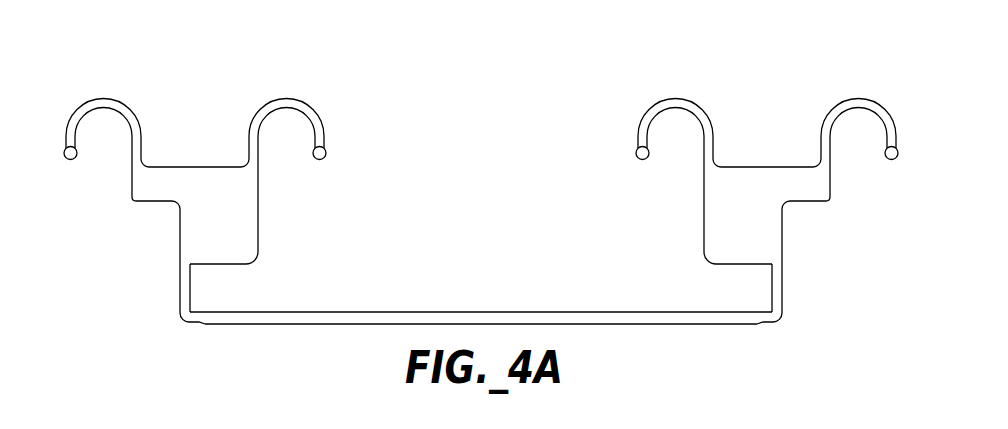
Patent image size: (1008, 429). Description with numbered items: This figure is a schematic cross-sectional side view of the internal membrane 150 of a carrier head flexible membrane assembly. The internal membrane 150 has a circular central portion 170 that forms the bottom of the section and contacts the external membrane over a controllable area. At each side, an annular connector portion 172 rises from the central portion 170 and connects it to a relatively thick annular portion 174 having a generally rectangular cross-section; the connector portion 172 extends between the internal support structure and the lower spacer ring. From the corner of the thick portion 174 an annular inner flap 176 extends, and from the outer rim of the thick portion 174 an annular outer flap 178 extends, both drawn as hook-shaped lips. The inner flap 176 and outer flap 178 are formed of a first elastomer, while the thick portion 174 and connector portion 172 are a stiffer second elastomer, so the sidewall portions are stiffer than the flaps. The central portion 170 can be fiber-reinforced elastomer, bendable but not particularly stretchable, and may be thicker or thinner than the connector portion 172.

The internal membrane 150 is at (481, 218).
The circular central portion 170 is at (425, 312).
The annular connector portion 172 is at (180, 302).
The thick annular portion 174 is at (250, 217).
The annular inner flap 176 is at (286, 97).
The annular outer flap 178 is at (102, 97).